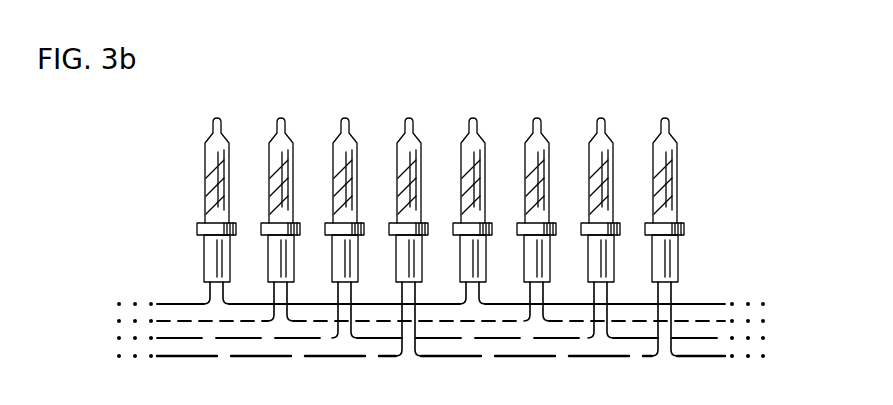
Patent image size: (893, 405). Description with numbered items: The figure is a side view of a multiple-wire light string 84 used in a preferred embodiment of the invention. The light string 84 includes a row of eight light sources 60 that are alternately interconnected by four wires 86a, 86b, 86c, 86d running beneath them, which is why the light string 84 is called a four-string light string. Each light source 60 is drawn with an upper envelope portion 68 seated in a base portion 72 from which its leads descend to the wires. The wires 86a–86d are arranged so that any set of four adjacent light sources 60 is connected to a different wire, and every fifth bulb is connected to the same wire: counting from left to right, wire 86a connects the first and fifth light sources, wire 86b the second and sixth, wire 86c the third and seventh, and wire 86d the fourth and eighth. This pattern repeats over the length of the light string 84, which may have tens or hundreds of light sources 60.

The light string 84 is at (624, 54).
The light sources 60 is at (198, 119).
The lamp envelope 68 is at (343, 137).
The lamp base 72 is at (327, 228).
The wire 86a is at (192, 304).
The wire 86b is at (168, 321).
The wire 86c is at (710, 336).
The wire 86d is at (718, 355).